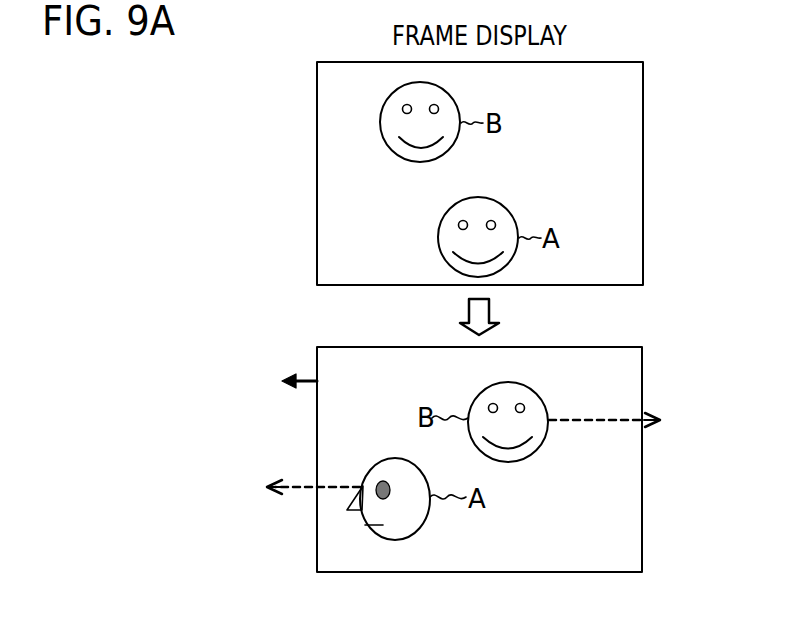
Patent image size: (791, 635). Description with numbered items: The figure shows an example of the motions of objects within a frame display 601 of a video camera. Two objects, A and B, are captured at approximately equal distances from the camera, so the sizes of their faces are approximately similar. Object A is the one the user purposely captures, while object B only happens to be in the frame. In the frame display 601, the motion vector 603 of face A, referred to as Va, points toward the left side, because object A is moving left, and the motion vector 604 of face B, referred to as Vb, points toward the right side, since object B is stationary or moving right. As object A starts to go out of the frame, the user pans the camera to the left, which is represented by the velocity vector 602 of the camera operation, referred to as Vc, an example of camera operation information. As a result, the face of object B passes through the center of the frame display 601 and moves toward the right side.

The frame display 601 is at (337, 62).
The velocity vector of a camera operation 602 is at (306, 374).
The motion vector of face A 603 is at (303, 483).
The motion vector of face B 604 is at (585, 418).